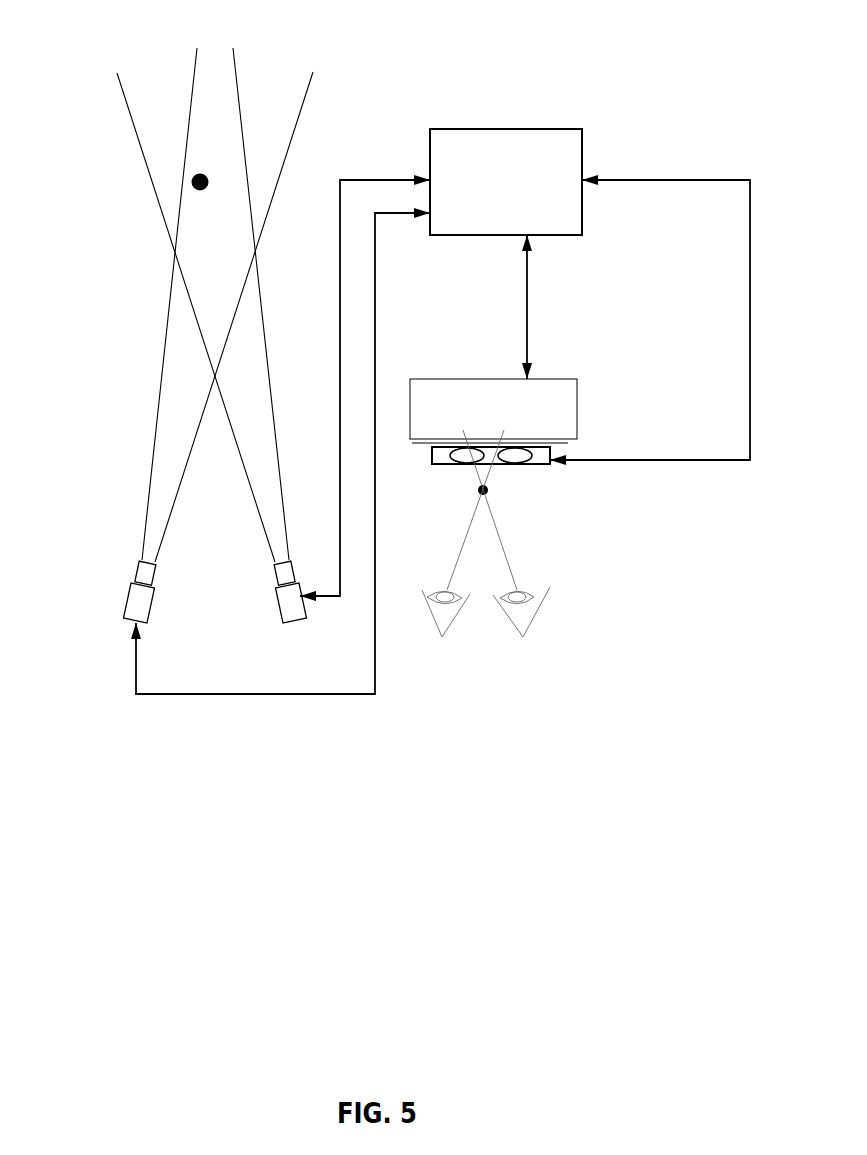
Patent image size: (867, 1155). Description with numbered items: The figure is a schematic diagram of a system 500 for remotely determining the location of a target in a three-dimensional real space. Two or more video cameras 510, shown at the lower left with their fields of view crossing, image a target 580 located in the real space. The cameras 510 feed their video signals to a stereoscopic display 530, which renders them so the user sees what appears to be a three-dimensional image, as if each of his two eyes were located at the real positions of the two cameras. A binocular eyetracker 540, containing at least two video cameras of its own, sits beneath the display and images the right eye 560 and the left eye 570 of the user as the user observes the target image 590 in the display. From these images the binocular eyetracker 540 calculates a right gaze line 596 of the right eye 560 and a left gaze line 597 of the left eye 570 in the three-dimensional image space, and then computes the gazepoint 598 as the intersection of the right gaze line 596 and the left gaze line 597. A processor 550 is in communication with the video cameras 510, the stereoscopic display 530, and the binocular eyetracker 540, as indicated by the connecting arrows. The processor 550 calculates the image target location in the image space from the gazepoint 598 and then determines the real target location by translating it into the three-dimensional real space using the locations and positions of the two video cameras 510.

The system 500 is at (250, 908).
The video cameras 510 is at (130, 601).
The stereoscopic display 530 is at (438, 379).
The binocular eyetracker 540 is at (558, 455).
The processor 550 is at (522, 129).
The right eye 560 is at (535, 602).
The left eye 570 is at (433, 611).
The target 580 is at (198, 172).
The target image 590 is at (486, 492).
The right gaze line 596 is at (515, 578).
The left gaze line 597 is at (468, 530).
The gazepoint 598 is at (478, 490).